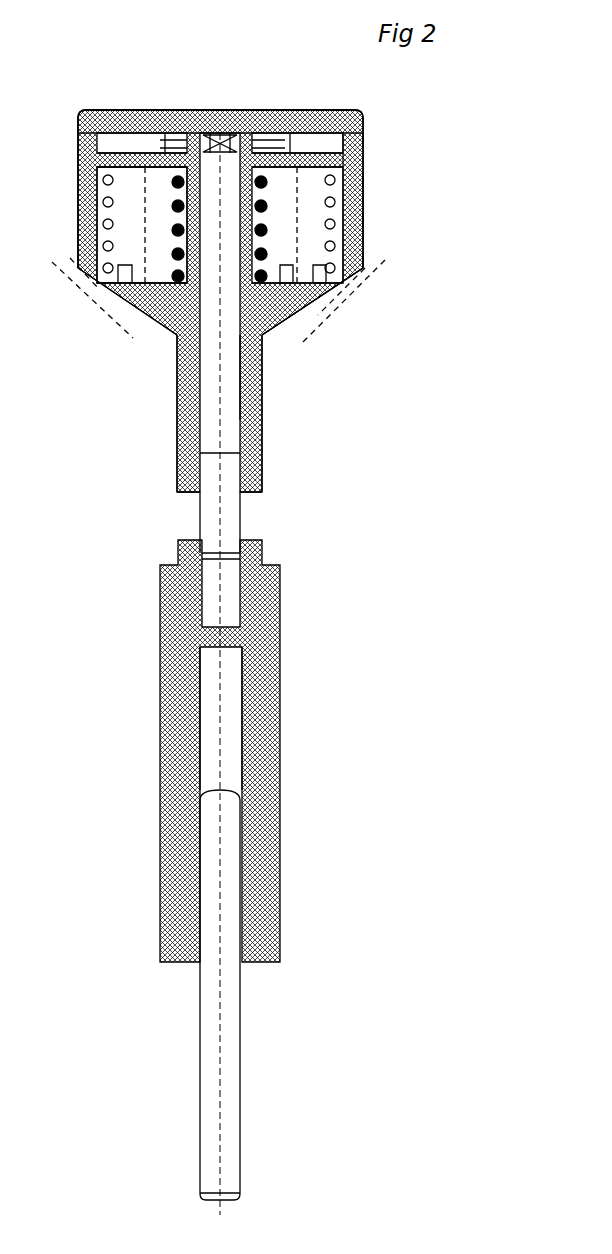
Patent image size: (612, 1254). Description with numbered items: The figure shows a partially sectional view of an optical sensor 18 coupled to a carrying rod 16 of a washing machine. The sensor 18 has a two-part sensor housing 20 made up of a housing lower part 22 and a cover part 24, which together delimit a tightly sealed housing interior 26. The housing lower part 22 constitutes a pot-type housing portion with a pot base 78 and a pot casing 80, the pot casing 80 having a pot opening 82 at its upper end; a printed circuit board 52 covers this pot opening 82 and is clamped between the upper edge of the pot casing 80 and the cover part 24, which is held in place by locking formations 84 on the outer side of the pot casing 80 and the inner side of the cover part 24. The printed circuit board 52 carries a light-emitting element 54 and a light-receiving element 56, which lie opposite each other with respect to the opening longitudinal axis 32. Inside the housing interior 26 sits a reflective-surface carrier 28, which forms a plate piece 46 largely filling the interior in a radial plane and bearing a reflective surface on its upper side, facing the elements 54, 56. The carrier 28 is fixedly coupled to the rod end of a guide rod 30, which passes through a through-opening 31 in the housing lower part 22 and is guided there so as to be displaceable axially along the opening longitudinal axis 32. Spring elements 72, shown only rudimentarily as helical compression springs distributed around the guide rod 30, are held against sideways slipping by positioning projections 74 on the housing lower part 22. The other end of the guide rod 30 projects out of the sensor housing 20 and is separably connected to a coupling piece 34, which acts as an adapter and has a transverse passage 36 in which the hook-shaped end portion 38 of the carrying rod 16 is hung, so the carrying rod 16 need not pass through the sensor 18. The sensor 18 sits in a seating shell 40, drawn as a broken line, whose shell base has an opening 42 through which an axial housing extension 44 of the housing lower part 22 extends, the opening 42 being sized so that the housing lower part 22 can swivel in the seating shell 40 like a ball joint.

The carrying rod 16 is at (247, 1047).
The sensor 18 is at (440, 201).
The sensor housing 20 is at (365, 160).
The housing lower part 22 is at (333, 310).
The cover part 24 is at (123, 110).
The housing interior 26 is at (137, 206).
The reflective-surface carrier 28 is at (362, 128).
The guide rod 30 is at (262, 437).
The through-opening 31 is at (263, 495).
The opening longitudinal axis 32 is at (212, 370).
The coupling piece 34 is at (280, 648).
The transverse passage 36 is at (228, 752).
The end portion 38 is at (228, 870).
The seating shell 40 is at (362, 293).
The opening 42 is at (158, 335).
The axial housing extension 44 is at (230, 397).
The plate piece 46 is at (187, 112).
The printed circuit board 52 is at (323, 112).
The light-emitting element 54 is at (228, 112).
The light-receiving element 56 is at (213, 112).
The spring elements 72 is at (363, 230).
The positioning projections 74 is at (105, 300).
The pot base 78 is at (155, 322).
The pot casing 80 is at (78, 148).
The pot opening 82 is at (290, 112).
The locking formations 84 is at (363, 208).